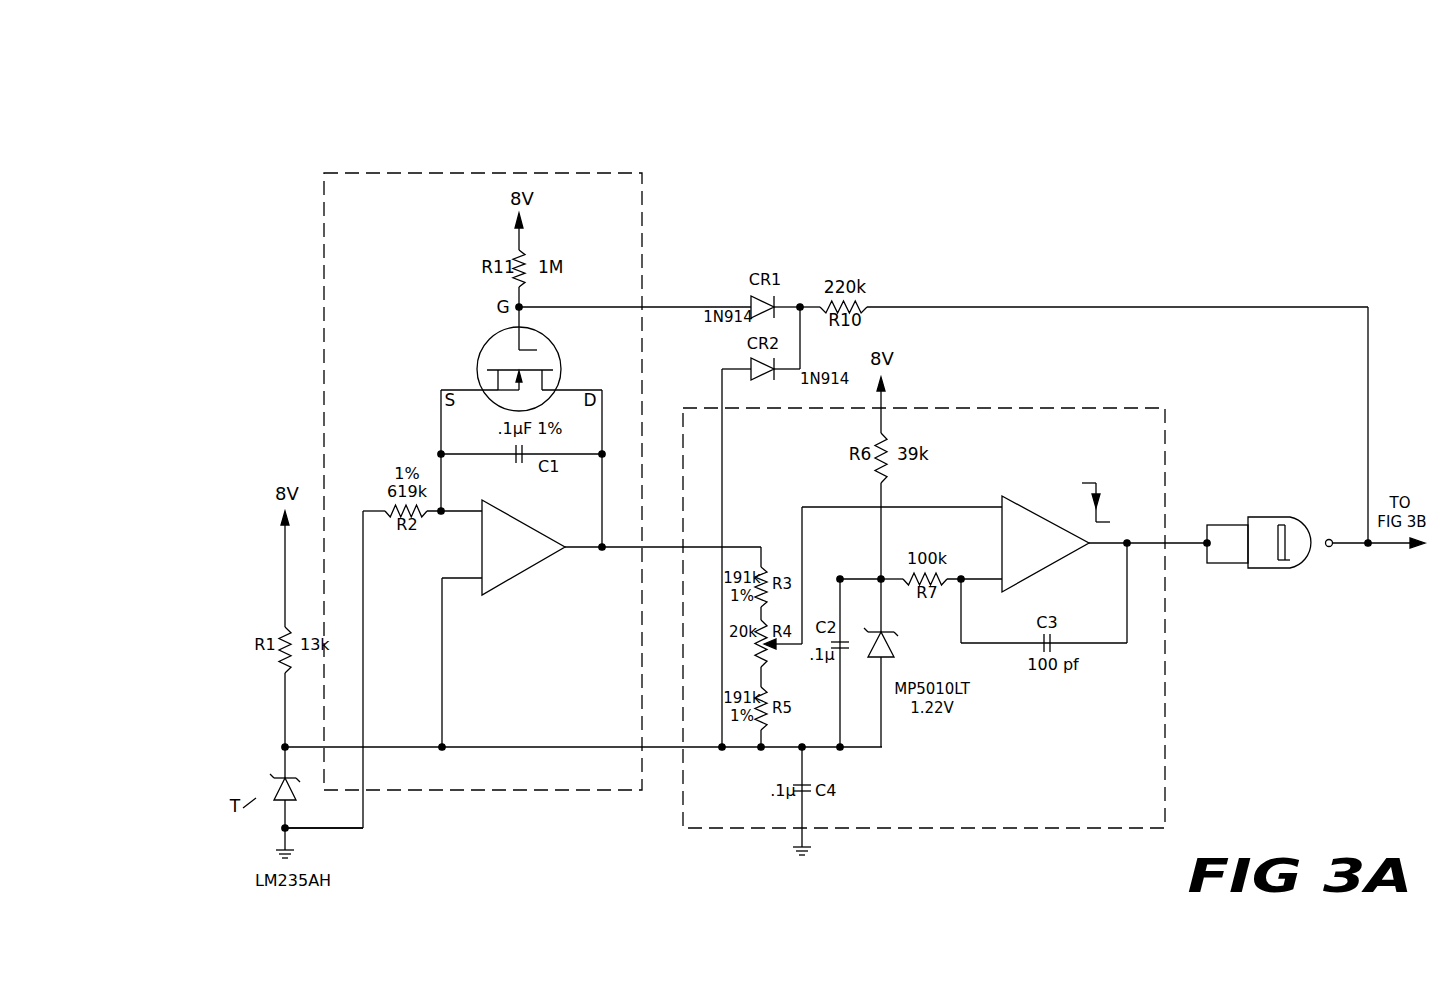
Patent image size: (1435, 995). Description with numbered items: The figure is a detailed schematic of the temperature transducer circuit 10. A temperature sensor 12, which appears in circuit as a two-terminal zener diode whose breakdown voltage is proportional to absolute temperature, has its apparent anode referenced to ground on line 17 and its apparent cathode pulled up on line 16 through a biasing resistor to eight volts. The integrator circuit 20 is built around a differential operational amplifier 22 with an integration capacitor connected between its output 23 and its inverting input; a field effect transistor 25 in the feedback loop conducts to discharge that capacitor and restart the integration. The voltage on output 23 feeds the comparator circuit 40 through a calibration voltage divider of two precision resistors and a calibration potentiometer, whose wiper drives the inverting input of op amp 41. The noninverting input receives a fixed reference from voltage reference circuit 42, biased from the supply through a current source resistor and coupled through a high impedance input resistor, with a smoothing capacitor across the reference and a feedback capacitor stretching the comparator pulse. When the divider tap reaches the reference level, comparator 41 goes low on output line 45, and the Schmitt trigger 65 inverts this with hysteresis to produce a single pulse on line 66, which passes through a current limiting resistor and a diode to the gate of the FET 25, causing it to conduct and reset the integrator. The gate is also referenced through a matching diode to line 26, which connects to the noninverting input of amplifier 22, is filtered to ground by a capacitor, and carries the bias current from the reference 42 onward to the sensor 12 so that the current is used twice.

The temperature transducer circuit 10 is at (980, 262).
The temperature sensor 12 is at (268, 780).
The line 16 is at (281, 692).
The line 17 is at (327, 832).
The integrator circuit 20 is at (642, 217).
The differential operational amplifier 22 is at (486, 522).
The output 23 is at (598, 550).
The field effect transistor 25 is at (561, 349).
The line 26 is at (526, 748).
The comparator circuit 40 is at (1138, 408).
The op amp 41 is at (1055, 568).
The voltage reference circuit 42 is at (898, 650).
The output line 45 is at (1137, 548).
The Schmitt trigger 65 is at (1274, 517).
The line 66 is at (1355, 549).